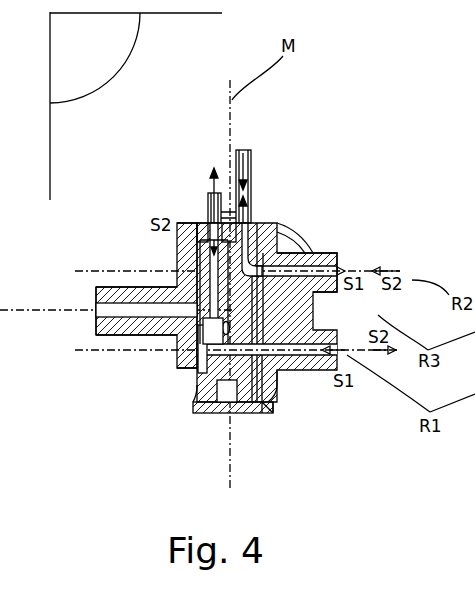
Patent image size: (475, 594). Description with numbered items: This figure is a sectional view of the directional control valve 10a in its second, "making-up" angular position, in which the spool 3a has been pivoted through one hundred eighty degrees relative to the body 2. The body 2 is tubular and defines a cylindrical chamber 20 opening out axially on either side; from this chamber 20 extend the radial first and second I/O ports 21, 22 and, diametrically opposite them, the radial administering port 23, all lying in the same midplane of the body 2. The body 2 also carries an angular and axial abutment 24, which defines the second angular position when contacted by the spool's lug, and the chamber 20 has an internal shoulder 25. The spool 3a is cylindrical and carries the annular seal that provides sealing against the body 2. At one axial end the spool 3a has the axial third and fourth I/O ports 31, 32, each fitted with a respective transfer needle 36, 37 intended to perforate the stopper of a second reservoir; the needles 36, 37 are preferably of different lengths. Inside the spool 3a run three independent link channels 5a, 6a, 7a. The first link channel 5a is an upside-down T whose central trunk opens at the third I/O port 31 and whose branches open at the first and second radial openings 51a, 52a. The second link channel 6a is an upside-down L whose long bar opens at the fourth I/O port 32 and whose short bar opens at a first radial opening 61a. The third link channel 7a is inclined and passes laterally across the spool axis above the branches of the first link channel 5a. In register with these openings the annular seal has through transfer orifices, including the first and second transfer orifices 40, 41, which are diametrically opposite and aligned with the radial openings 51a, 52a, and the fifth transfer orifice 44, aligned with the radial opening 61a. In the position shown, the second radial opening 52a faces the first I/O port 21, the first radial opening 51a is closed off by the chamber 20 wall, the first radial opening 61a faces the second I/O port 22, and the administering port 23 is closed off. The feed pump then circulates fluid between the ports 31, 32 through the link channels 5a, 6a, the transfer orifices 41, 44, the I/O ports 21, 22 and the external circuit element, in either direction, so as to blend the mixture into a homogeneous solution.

The directional control valve 10a is at (150, 135).
The body 2 is at (178, 246).
The spool 3a is at (177, 258).
The third I/O port 31 is at (177, 222).
The administering port 23 is at (70, 337).
The first link channel 5a is at (177, 348).
The angular and axial abutment 24 is at (222, 413).
The second I/O port 22 is at (342, 268).
The first I/O port 21 is at (347, 355).
The fifth transfer orifice 44 is at (318, 252).
The second link channel 6a is at (297, 242).
The first radial opening of the second link channel 61a is at (303, 252).
The second transfer orifice 41 is at (278, 372).
The second radial opening of the first link channel 52a is at (271, 413).
The first radial opening of the first link channel 51a is at (193, 410).
The third link channel 7a is at (177, 387).
The first transfer orifice 40 is at (183, 352).
The cylindrical chamber 20 is at (200, 212).
The internal shoulder 25 is at (280, 240).
The fourth I/O port 32 is at (268, 223).
The transfer needle 36 is at (203, 217).
The transfer needle 37 is at (254, 192).